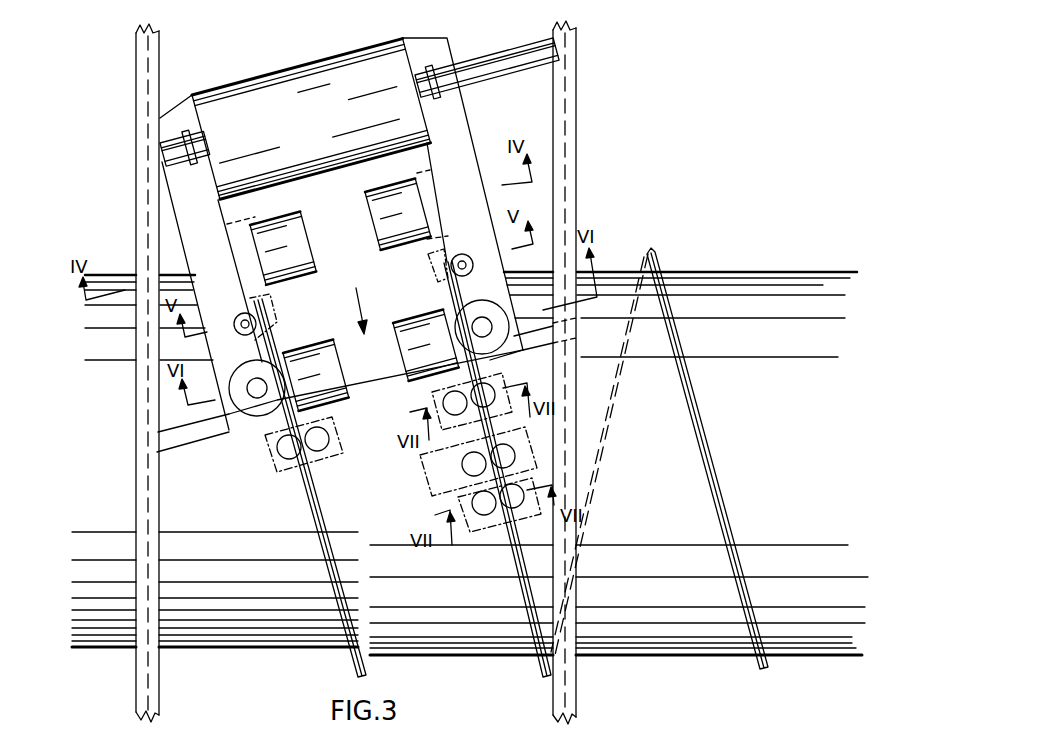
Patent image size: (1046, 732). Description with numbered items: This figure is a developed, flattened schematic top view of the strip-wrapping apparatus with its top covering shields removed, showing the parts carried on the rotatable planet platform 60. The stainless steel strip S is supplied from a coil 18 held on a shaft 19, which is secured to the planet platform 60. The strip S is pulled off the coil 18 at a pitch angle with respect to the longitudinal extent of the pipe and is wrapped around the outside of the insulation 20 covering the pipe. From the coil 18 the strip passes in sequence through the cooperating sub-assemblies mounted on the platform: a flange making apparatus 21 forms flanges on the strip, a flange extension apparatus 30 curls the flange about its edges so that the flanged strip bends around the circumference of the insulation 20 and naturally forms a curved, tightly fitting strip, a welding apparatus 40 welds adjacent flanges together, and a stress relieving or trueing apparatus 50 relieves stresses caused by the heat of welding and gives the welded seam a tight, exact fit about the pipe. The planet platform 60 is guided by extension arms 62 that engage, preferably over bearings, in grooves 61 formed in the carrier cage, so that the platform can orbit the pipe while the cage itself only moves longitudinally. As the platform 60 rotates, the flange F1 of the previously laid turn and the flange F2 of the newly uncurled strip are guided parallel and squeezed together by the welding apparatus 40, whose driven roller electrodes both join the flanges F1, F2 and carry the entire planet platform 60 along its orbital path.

The coil of strip material 18 is at (308, 131).
The shaft 19 is at (423, 73).
The insulation material 20 is at (268, 638).
The flange making apparatus 21 is at (460, 170).
The flange extension apparatus 30 is at (343, 440).
The welding apparatus 40 is at (426, 490).
The stress relieving or trueing apparatus 50 is at (468, 535).
The planet platform 60 is at (212, 242).
The grooves 61 is at (146, 706).
The extension arms 62 is at (166, 157).
The stainless steel strip S is at (349, 239).
The flange of previously laid strip F1 is at (757, 672).
The flange of newly uncurled strip F2 is at (770, 668).